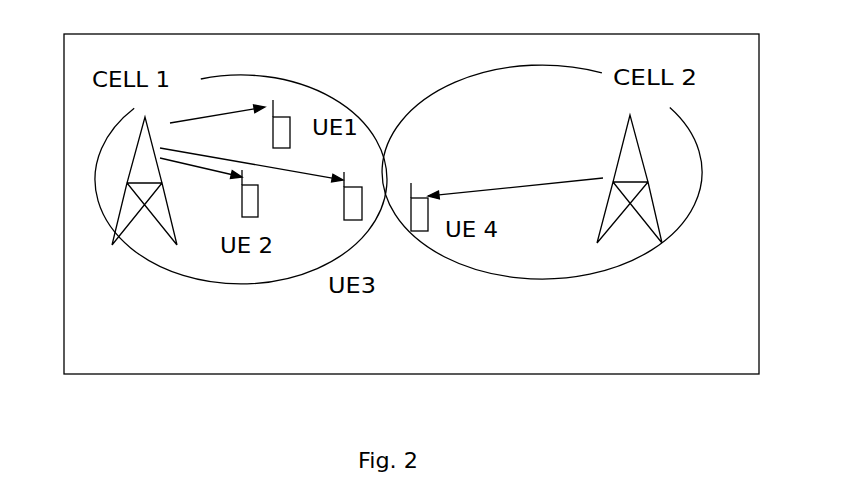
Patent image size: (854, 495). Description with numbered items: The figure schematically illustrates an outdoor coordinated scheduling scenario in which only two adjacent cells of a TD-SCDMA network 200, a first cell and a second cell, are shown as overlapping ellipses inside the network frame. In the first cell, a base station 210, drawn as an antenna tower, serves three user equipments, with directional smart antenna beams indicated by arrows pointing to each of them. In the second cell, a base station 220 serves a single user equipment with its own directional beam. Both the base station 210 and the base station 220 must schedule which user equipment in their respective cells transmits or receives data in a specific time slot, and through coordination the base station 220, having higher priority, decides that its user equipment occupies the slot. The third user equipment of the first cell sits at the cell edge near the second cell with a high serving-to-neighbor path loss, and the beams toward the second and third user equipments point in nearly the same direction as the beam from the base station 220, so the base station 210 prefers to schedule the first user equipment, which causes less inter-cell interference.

The TD-SCDMA network 200 is at (411, 221).
The base station 210 is at (161, 228).
The base station 220 is at (636, 230).